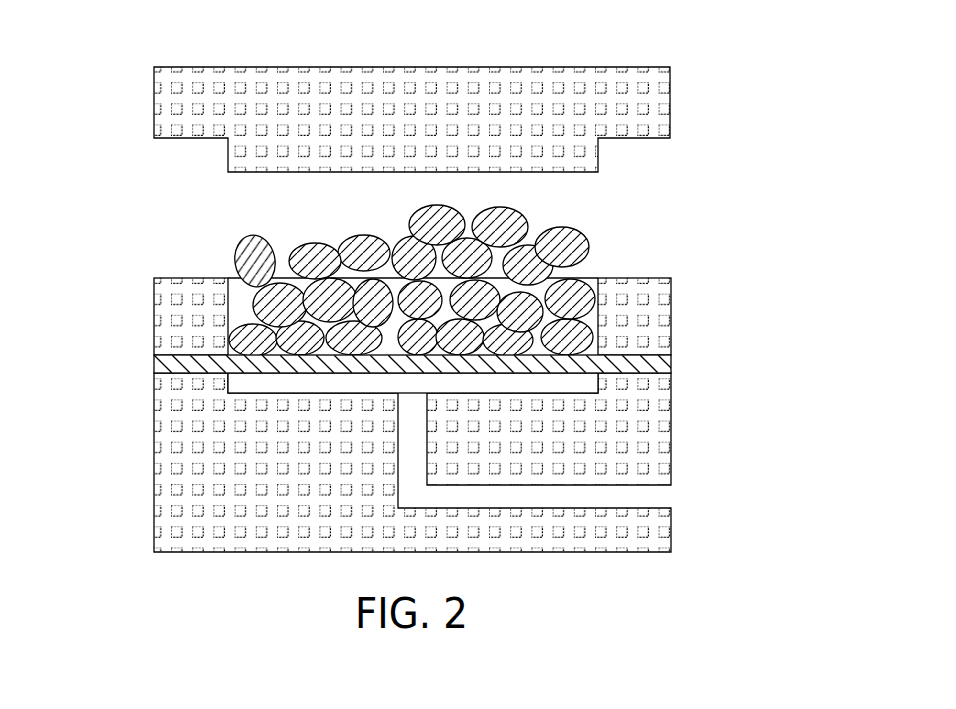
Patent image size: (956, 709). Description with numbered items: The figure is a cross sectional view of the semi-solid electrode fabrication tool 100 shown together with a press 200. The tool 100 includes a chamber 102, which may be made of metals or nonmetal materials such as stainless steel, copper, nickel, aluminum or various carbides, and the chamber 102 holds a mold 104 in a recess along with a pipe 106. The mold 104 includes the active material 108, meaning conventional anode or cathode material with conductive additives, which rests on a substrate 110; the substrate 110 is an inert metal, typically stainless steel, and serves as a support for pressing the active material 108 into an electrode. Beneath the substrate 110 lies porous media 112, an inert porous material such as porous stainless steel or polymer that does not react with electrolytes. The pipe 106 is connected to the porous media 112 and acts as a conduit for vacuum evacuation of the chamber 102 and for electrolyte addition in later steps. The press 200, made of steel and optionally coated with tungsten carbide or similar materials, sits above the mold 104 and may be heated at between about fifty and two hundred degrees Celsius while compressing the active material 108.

The semi-solid electrode fabrication tool 100 is at (718, 409).
The chamber 102 is at (154, 508).
The mold 104 is at (585, 277).
The pipe 106 is at (671, 497).
The active material 108 is at (305, 242).
The substrate 110 is at (154, 362).
The porous media 112 is at (252, 387).
The press 200 is at (670, 102).